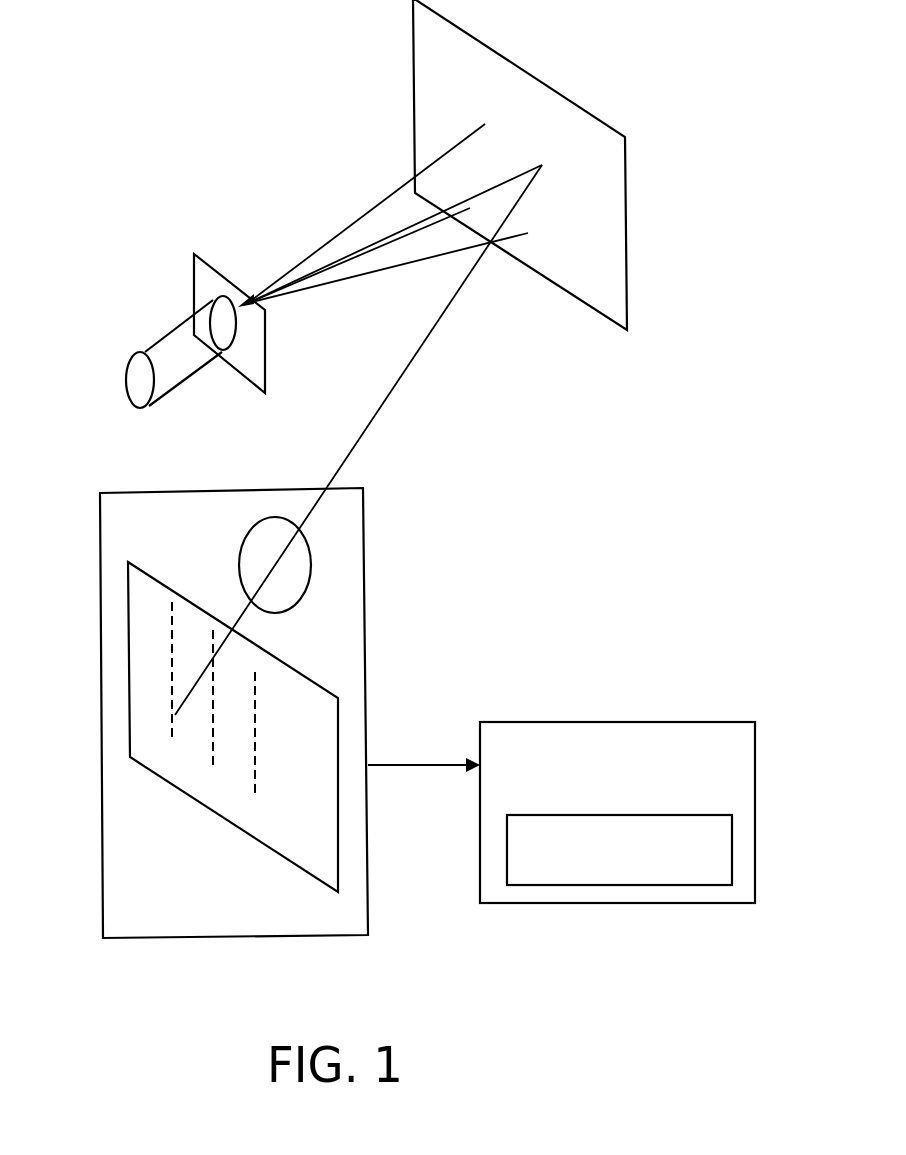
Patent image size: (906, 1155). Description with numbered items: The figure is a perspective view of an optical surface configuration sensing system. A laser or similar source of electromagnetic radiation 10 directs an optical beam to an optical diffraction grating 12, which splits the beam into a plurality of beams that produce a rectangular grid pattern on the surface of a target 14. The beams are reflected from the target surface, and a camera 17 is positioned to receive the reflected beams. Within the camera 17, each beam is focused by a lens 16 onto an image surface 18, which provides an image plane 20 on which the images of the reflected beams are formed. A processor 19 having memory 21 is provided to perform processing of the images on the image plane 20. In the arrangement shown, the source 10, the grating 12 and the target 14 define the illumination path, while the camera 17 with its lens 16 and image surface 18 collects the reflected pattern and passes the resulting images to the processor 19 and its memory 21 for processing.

The source of electromagnetic radiation 10 is at (167, 337).
The optical diffraction grating 12 is at (222, 268).
The target 14 is at (582, 107).
The lens 16 is at (308, 555).
The camera 17 is at (376, 656).
The image surface 18 is at (242, 825).
The processor 19 is at (632, 708).
The image plane 20 is at (170, 643).
The memory 21 is at (613, 885).